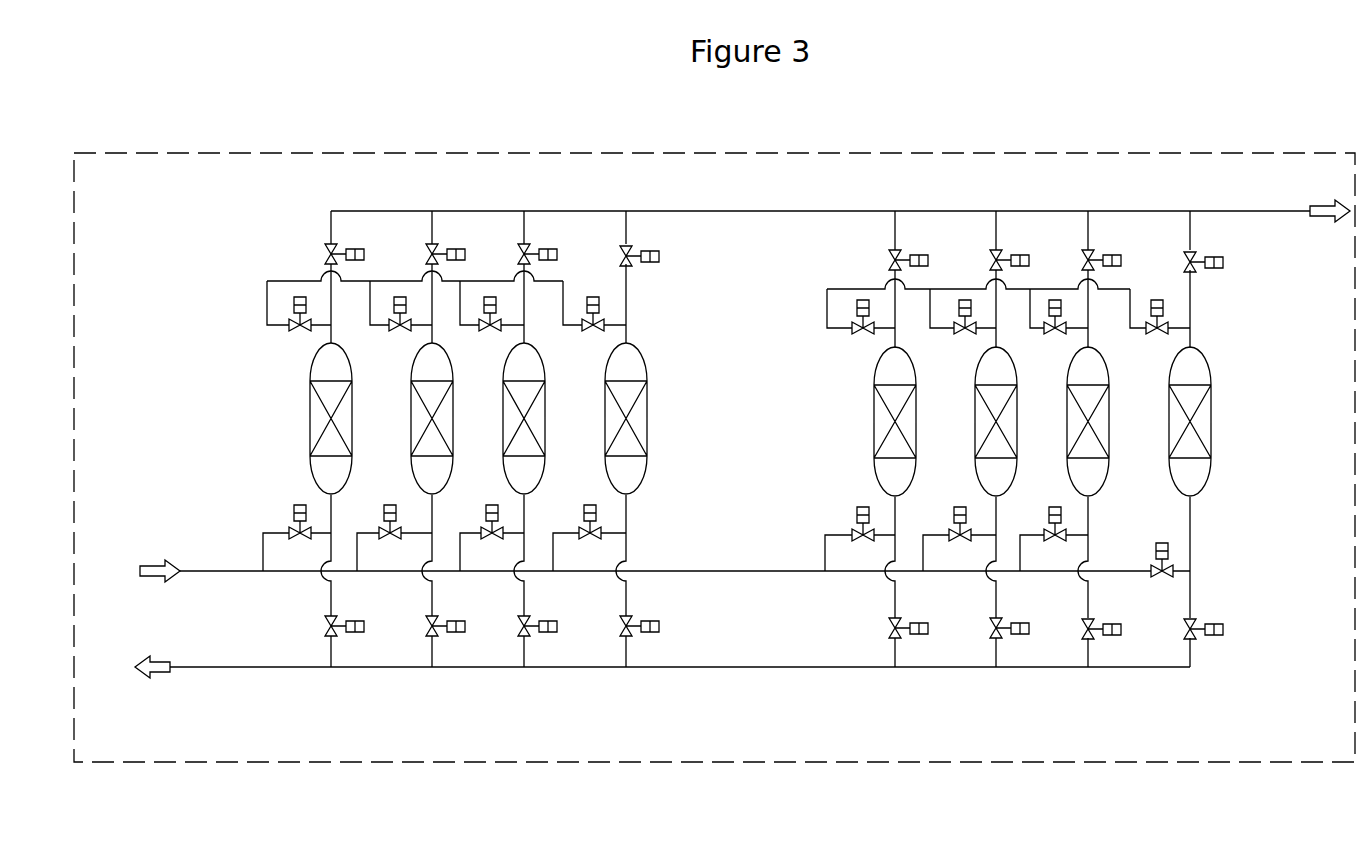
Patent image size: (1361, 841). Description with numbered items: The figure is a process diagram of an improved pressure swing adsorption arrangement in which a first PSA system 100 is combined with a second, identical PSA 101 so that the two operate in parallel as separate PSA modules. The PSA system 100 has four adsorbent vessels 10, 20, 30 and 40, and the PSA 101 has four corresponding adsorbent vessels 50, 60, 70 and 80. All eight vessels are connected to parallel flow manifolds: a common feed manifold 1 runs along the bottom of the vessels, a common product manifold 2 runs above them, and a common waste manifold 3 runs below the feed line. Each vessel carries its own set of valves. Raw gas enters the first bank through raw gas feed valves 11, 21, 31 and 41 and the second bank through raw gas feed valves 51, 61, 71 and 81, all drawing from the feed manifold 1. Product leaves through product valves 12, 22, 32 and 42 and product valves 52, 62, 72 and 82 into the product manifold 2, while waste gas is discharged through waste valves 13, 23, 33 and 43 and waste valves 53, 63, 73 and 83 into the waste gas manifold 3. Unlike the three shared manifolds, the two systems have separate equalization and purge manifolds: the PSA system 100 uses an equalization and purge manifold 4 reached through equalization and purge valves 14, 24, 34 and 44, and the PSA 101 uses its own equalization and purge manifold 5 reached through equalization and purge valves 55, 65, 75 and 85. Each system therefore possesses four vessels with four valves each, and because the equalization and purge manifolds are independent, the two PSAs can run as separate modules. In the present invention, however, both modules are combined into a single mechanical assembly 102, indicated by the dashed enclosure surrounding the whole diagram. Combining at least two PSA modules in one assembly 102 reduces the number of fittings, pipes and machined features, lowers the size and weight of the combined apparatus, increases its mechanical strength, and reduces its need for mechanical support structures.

The feed manifold 1 is at (653, 571).
The product manifold 2 is at (829, 209).
The waste gas manifold 3 is at (652, 667).
The equalization and purge manifold 4 is at (433, 298).
The equalization and purge manifold 5 is at (993, 303).
The adsorbent vessel 10 is at (319, 418).
The adsorbent vessel 20 is at (418, 418).
The adsorbent vessel 30 is at (510, 418).
The adsorbent vessel 40 is at (612, 418).
The adsorbent vessel 50 is at (880, 421).
The adsorbent vessel 60 is at (981, 421).
The adsorbent vessel 70 is at (1074, 421).
The adsorbent vessel 80 is at (1174, 421).
The raw gas feed valve 11 is at (297, 536).
The raw gas feed valve 21 is at (394, 537).
The raw gas feed valve 31 is at (492, 537).
The raw gas feed valve 41 is at (589, 537).
The raw gas feed valve 51 is at (860, 537).
The raw gas feed valve 61 is at (959, 537).
The raw gas feed valve 71 is at (1054, 537).
The raw gas feed valve 81 is at (1149, 558).
The product valve 12 is at (345, 246).
The product valve 22 is at (448, 247).
The product valve 32 is at (540, 247).
The product valve 42 is at (641, 250).
The product valve 52 is at (910, 251).
The product valve 62 is at (1010, 252).
The product valve 72 is at (1104, 252).
The product valve 82 is at (1207, 255).
The waste valve 13 is at (345, 620).
The waste valve 23 is at (446, 620).
The waste valve 33 is at (537, 620).
The waste valve 43 is at (643, 620).
The waste valve 53 is at (910, 619).
The waste valve 63 is at (1011, 620).
The waste valve 73 is at (1103, 622).
The waste valve 83 is at (1206, 620).
The equalization and purge valve 14 is at (290, 311).
The equalization and purge valve 24 is at (393, 311).
The equalization and purge valve 34 is at (483, 311).
The equalization and purge valve 44 is at (584, 311).
The equalization and purge valve 55 is at (853, 316).
The equalization and purge valve 65 is at (956, 316).
The equalization and purge valve 75 is at (1047, 316).
The equalization and purge valve 85 is at (1149, 316).
The PSA system 100 is at (452, 686).
The second PSA 101 is at (1009, 686).
The single mechanical assembly 102 is at (774, 788).